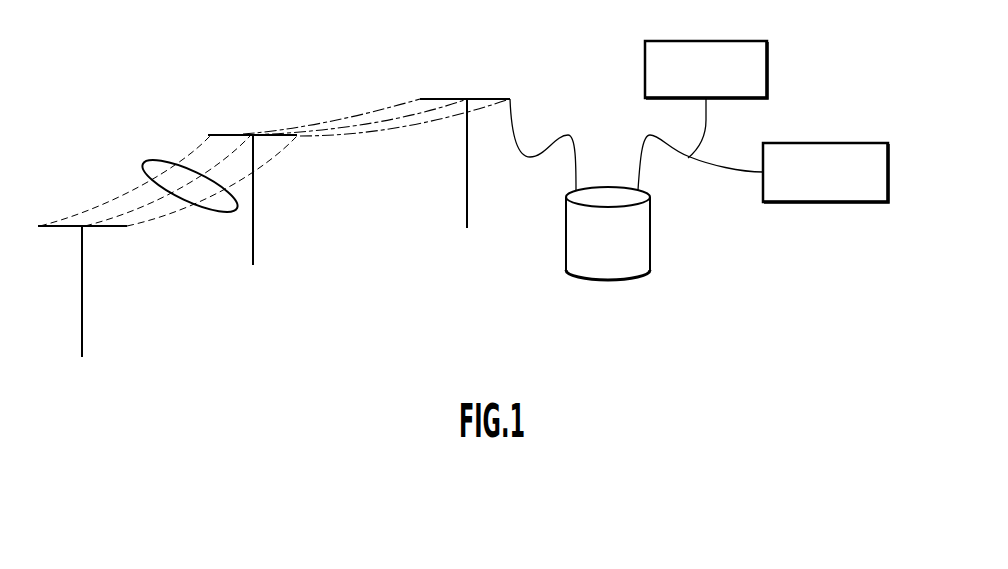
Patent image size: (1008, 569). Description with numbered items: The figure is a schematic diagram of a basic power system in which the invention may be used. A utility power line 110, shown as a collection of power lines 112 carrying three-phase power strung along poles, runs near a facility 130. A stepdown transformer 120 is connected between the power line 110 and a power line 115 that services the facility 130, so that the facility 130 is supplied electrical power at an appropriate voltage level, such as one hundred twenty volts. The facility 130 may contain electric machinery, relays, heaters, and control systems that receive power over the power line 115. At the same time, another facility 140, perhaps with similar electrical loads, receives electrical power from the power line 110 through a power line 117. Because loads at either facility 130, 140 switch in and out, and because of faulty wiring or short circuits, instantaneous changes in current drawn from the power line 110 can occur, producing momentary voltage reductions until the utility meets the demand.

The utility power line 110 is at (150, 222).
The collection of power lines 112 is at (143, 168).
The power line 115 is at (725, 172).
The power line 117 is at (707, 129).
The stepdown transformer 120 is at (565, 232).
The facility 130 is at (837, 143).
The facility 140 is at (767, 70).